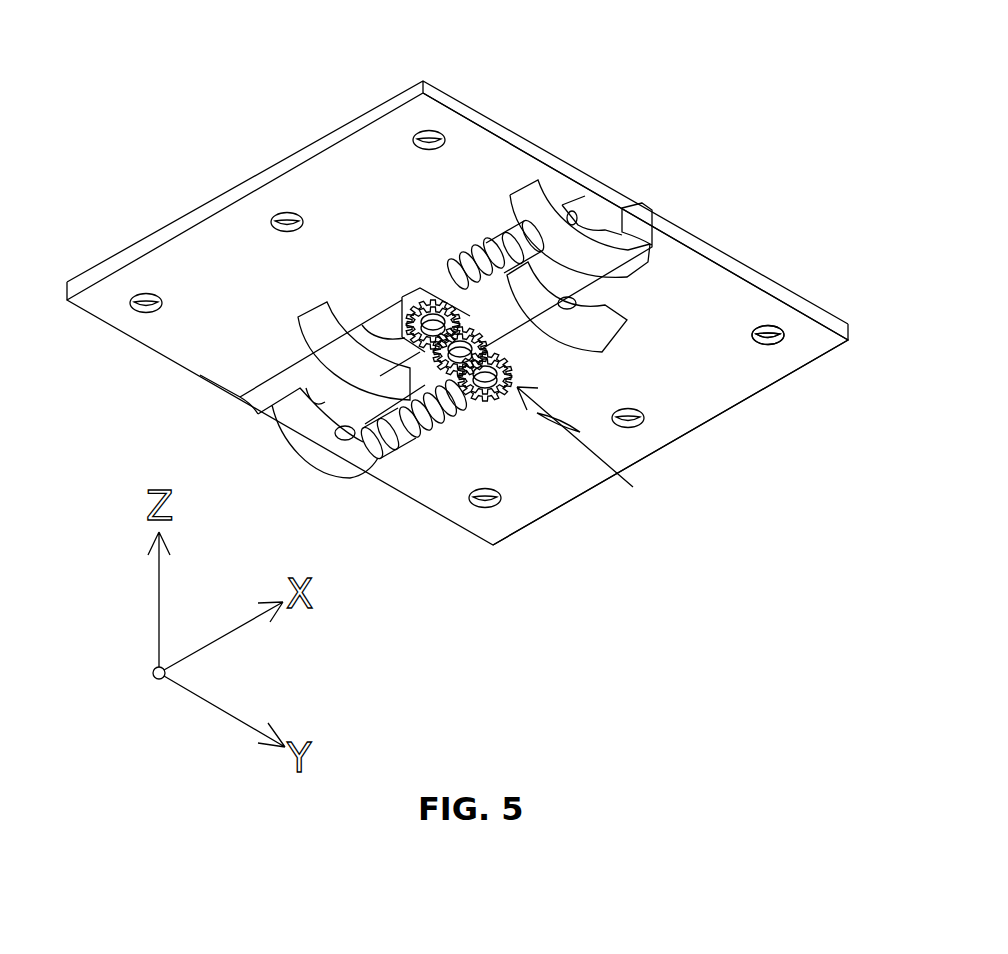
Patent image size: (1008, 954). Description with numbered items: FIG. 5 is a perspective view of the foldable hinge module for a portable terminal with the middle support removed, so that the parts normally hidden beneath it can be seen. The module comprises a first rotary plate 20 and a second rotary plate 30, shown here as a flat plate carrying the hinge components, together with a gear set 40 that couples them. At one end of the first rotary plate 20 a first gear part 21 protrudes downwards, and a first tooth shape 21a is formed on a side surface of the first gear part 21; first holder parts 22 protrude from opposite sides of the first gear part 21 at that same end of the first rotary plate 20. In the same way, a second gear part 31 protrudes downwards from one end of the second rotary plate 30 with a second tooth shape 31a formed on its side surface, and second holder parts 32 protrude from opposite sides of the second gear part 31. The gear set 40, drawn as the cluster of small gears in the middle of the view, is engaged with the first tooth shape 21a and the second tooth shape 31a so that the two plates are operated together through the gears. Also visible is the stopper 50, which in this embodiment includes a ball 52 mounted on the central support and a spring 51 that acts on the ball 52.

The first rotary plate 20 is at (174, 333).
The second rotary plate 30 is at (780, 360).
The first gear part 21 is at (427, 270).
The first tooth shape 21a is at (513, 360).
The second gear part 31 is at (362, 325).
The second tooth shape 31a is at (503, 393).
The first holder parts 22 is at (532, 202).
The second holder parts 32 is at (590, 330).
The gear set 40 is at (591, 446).
The stopper 50 is at (452, 319).
The spring 51 is at (428, 247).
The ball 52 is at (460, 253).